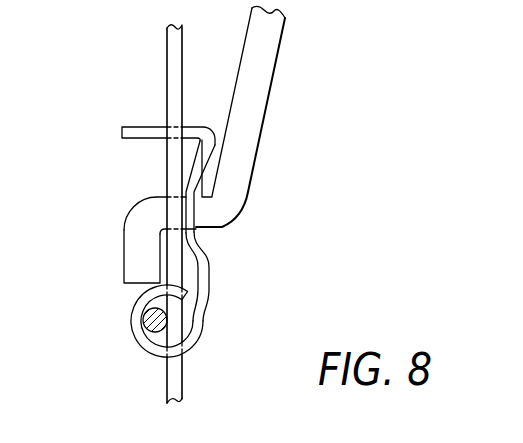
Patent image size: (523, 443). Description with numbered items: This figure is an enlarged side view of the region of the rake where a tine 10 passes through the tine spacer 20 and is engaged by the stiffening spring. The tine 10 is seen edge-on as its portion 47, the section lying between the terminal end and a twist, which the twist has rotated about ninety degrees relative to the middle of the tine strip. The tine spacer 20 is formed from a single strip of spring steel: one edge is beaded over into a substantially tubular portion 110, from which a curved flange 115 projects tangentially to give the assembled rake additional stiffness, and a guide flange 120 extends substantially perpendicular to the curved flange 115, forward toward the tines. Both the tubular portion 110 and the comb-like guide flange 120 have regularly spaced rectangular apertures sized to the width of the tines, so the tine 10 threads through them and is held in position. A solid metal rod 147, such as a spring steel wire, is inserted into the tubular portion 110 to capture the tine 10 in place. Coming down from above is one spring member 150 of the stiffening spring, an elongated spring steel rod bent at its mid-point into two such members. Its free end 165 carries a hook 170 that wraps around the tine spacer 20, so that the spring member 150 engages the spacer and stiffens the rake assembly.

The tine 10 is at (185, 378).
The tine spacer 20 is at (215, 268).
The portion of tine 47 is at (167, 47).
The tubular portion 110 is at (138, 344).
The curved flange 115 is at (207, 250).
The guide flange 120 is at (138, 126).
The solid metal rod 147 is at (143, 312).
The spring member 150 is at (280, 50).
The free end 165 is at (121, 252).
The hook 170 is at (143, 203).